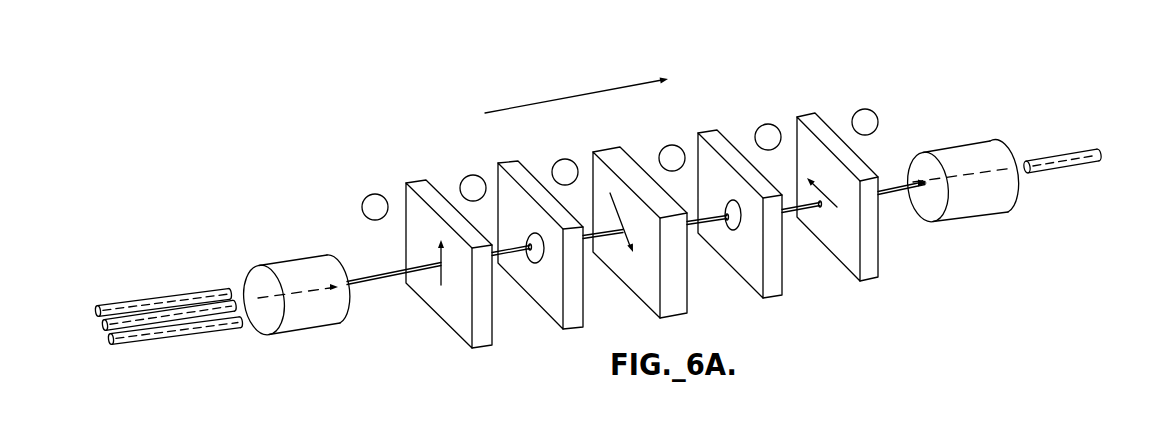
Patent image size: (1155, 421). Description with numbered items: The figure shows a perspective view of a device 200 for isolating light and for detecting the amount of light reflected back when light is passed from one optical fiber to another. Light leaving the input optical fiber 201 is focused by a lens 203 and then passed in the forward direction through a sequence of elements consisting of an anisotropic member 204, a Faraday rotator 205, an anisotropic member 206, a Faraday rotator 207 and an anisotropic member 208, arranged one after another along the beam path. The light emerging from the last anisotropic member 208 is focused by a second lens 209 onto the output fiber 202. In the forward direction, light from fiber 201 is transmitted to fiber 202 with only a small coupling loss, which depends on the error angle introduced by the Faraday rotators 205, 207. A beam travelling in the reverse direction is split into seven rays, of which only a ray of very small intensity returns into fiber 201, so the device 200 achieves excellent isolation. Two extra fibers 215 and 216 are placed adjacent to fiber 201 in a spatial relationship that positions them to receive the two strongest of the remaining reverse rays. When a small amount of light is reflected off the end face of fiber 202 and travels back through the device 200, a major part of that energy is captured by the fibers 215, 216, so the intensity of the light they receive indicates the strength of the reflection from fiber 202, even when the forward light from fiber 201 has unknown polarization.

The device 200 is at (298, 75).
The optical fiber 201 is at (100, 328).
The extra fiber 215 is at (115, 310).
The extra fiber 216 is at (128, 337).
The fiber 202 is at (1077, 160).
The lens 203 is at (292, 260).
The anisotropic member 204 is at (415, 180).
The Faraday rotator 205 is at (512, 162).
The anisotropic member 206 is at (612, 146).
The Faraday rotator 207 is at (705, 131).
The anisotropic member 208 is at (802, 113).
The lens 209 is at (952, 145).